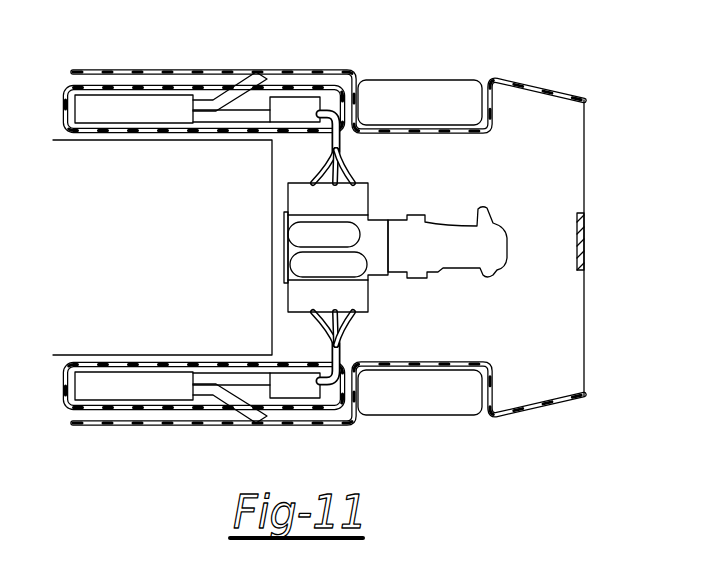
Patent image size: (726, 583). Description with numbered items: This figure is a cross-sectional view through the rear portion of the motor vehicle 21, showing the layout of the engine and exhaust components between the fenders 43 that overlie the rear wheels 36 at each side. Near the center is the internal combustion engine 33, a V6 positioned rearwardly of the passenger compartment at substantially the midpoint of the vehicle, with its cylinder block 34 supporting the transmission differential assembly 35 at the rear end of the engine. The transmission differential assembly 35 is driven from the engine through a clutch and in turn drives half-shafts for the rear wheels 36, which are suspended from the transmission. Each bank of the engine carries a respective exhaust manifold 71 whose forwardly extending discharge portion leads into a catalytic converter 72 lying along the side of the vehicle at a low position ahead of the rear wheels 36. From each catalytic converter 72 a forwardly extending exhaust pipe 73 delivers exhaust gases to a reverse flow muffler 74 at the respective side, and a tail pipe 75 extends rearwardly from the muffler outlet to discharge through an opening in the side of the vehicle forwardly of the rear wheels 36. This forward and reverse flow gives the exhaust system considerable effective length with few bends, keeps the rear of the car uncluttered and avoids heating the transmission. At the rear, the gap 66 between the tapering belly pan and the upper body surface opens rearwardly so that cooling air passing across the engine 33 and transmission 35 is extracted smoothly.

The motor vehicle 21 is at (114, 60).
The fenders 43 is at (175, 72).
The muffler 74 is at (143, 99).
The exhaust pipe 73 is at (222, 121).
The tail pipes 75 is at (263, 80).
The catalytic converters 72 is at (297, 107).
The rear wheels 36 is at (431, 92).
The exhaust manifold 71 is at (348, 162).
The internal combustion engine 33 is at (388, 210).
The cylinder block 34 is at (373, 269).
The transmission differential assembly 35 is at (490, 228).
The gap 66 is at (577, 153).